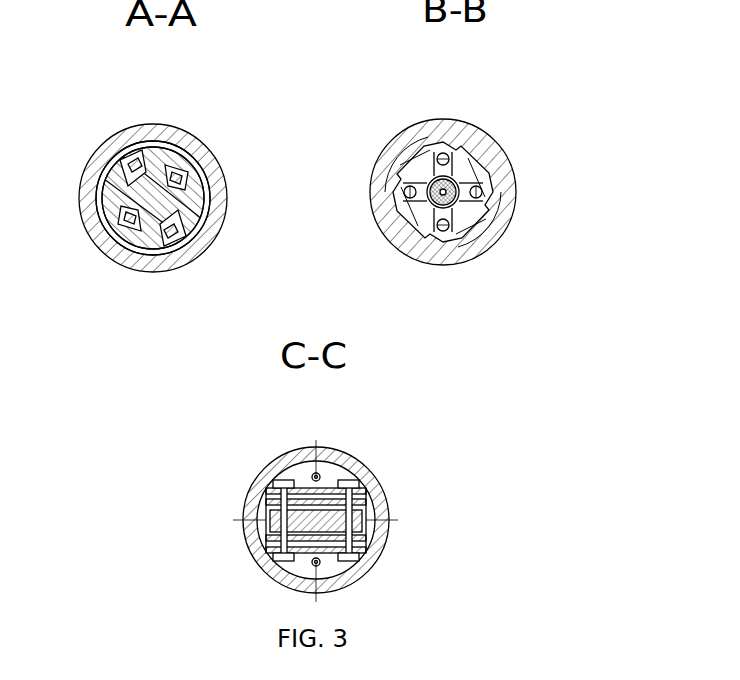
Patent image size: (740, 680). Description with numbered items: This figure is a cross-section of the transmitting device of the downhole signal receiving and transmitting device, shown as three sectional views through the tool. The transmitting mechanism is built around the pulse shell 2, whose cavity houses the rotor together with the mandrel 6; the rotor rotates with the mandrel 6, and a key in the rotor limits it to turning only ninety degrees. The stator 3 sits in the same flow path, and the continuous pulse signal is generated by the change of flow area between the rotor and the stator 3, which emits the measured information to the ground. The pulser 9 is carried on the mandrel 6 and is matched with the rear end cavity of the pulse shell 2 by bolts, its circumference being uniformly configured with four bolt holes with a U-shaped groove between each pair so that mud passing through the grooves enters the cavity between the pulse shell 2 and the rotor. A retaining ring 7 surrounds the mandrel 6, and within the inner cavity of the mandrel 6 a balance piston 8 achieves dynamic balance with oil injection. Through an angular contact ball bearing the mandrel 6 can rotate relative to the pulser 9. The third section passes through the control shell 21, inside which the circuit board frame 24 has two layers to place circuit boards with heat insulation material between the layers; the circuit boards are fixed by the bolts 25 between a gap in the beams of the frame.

The pulse shell 2 is at (152, 133).
The stator 3 is at (196, 191).
The pulser 9 is at (182, 220).
The retaining ring 7 is at (455, 184).
The mandrel 6 is at (453, 198).
The balance piston 8 is at (458, 204).
The control shell 21 is at (335, 453).
The circuit board frame 24 is at (328, 497).
The bolt 25 is at (368, 520).